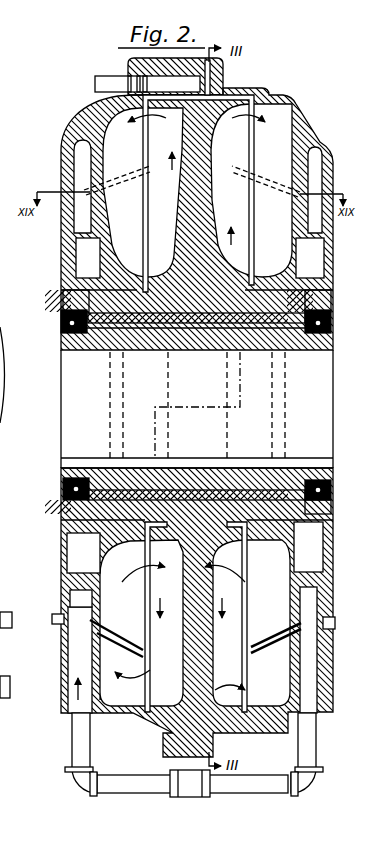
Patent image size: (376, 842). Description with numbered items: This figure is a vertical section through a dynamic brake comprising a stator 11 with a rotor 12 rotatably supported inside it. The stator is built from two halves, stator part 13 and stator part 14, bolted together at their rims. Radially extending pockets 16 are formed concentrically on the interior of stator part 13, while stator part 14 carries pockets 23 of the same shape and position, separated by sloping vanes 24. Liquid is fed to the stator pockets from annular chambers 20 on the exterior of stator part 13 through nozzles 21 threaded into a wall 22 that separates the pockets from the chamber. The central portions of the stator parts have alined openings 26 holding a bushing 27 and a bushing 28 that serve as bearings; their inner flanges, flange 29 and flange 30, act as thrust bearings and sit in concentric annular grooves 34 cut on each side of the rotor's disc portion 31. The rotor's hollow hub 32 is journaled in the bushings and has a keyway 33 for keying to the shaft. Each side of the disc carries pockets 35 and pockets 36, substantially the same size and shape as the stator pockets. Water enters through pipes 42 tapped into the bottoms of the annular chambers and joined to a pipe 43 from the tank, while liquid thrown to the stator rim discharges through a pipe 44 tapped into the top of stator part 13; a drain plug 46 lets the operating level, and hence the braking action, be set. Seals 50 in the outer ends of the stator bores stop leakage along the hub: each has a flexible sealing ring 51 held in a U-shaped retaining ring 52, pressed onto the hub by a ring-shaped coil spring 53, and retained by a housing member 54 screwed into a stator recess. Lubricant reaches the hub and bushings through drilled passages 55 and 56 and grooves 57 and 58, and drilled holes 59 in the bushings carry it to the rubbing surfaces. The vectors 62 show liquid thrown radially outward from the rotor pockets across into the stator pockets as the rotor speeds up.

The stator 11 is at (127, 60).
The rotor 12 is at (224, 90).
The stator part 13 is at (72, 134).
The stator part 14 is at (301, 125).
The pockets 16 is at (131, 162).
The annular chambers 20 is at (82, 236).
The nozzles 21 is at (80, 152).
The wall 22 is at (84, 173).
The pockets 23 is at (280, 160).
The vanes 24 is at (7, 331).
The alined openings 26 is at (195, 405).
The bushing 27 is at (68, 548).
The bushing 28 is at (296, 476).
The flange 29 is at (168, 490).
The flange 30 is at (240, 472).
The disc portion 31 is at (204, 616).
The hollow hub 32 is at (66, 485).
The keyway 33 is at (62, 461).
The annular grooves 34 is at (204, 472).
The pockets 35 is at (171, 195).
The pockets 36 is at (243, 187).
The pipes 42 is at (88, 753).
The pipe 43 is at (212, 790).
The pipe 44 is at (96, 90).
The drain plug 46 is at (52, 619).
The seals 50 is at (56, 331).
The sealing ring 51 is at (66, 333).
The retaining ring 52 is at (297, 352).
The coil spring 53 is at (63, 312).
The housing member 54 is at (63, 298).
The drilled passage 55 is at (318, 284).
The drilled passage 56 is at (72, 290).
The groove 57 is at (308, 547).
The groove 58 is at (108, 275).
The drilled holes 59 is at (101, 351).
The vectors 62 is at (171, 411).